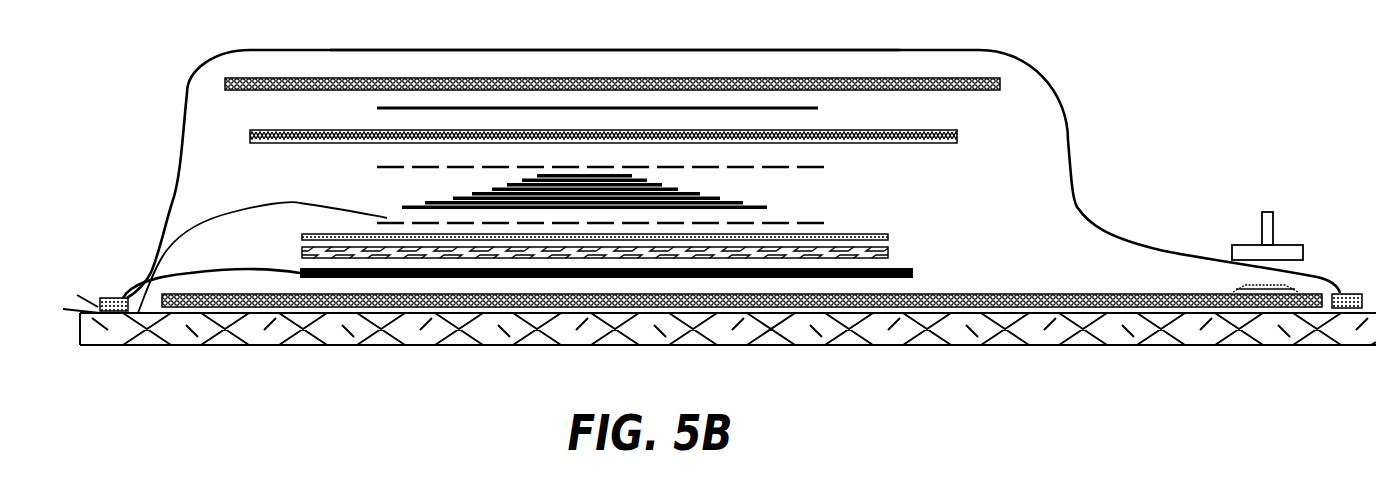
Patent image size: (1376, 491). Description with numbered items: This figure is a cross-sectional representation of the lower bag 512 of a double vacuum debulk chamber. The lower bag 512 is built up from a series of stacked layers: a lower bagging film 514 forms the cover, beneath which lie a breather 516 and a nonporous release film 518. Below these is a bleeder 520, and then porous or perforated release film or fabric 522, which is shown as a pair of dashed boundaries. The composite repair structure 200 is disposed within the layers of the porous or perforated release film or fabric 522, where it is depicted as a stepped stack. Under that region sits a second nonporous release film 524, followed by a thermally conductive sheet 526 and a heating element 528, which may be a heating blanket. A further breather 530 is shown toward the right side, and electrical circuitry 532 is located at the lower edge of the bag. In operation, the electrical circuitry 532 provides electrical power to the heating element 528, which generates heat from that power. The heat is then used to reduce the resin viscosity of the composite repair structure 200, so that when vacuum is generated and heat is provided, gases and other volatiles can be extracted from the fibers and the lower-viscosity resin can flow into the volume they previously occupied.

The composite repair structure 200 is at (452, 195).
The lower bag 512 is at (128, 96).
The lower bagging film 514 is at (327, 48).
The breather 516 is at (977, 76).
The nonporous release film 518 is at (818, 108).
The bleeder 520 is at (957, 129).
The porous or perforated release film or fabric 522 is at (832, 222).
The nonporous release film 524 is at (888, 237).
The thermally conductive sheet 526 is at (890, 248).
The heating element 528 is at (913, 270).
The breather 530 is at (1173, 288).
The electrical circuitry 532 is at (153, 268).